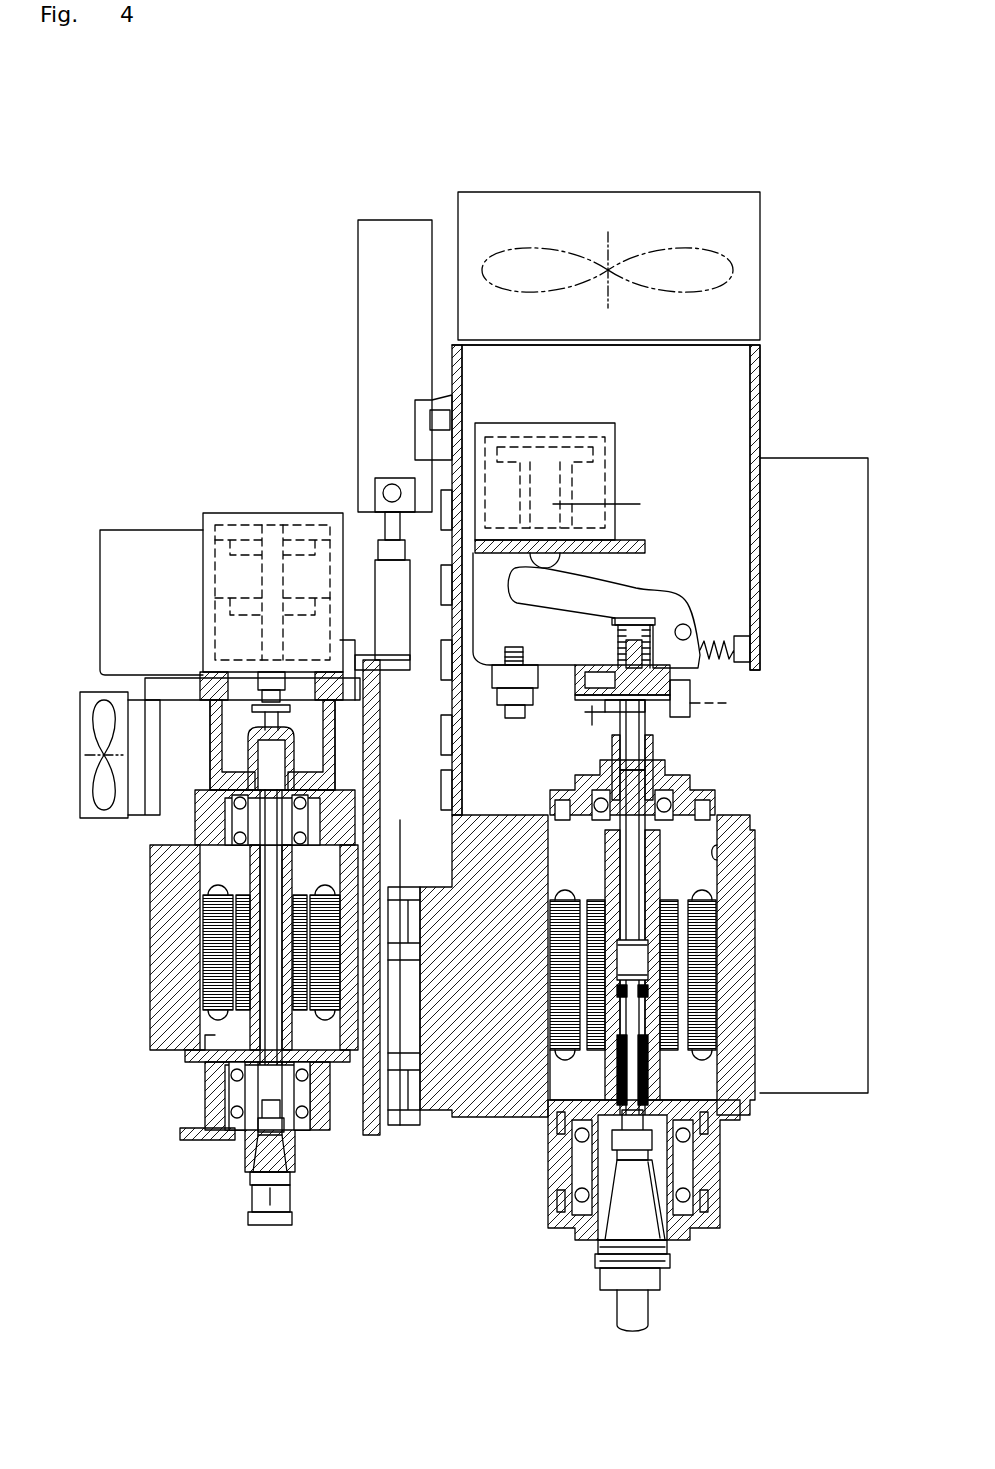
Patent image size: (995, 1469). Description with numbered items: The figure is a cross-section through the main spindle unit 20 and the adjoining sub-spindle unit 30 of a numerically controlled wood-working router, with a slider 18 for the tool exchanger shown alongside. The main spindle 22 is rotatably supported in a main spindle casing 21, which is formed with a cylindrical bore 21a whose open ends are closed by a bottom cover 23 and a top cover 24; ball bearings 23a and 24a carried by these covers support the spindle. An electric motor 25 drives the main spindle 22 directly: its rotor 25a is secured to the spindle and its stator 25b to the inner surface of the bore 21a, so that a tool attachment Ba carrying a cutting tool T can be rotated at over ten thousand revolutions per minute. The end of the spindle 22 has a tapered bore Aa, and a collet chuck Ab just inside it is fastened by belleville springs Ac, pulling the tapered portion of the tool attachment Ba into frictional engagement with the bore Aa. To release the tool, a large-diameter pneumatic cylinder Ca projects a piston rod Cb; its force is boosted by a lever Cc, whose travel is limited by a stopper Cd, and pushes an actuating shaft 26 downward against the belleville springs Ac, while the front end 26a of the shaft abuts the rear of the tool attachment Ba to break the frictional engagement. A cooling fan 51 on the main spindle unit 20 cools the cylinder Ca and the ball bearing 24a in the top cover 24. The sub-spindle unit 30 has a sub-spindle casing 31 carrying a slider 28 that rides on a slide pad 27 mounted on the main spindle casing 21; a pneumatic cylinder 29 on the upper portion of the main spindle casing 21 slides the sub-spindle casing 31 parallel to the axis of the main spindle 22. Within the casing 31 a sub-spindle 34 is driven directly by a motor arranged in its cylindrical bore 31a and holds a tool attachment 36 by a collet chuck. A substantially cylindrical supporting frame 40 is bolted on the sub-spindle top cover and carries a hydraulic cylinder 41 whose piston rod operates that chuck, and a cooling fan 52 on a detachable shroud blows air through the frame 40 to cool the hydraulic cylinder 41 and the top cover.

The slider for the tool exchanger 18 is at (830, 487).
The main spindle unit 20 is at (806, 350).
The main spindle casing 21 is at (735, 1000).
The cylindrical bore 21a is at (725, 850).
The main spindle 22 is at (720, 1080).
The bottom cover 23 is at (715, 1200).
The ball bearings 23a is at (705, 1165).
The top cover 24 is at (560, 795).
The ball bearing 24a is at (672, 802).
The electric motor 25 is at (855, 890).
The rotor 25a is at (705, 940).
The stator 25b is at (700, 905).
The actuating shaft 26 is at (630, 865).
The front end of the actuating shaft 26a is at (635, 1065).
The slide pad 27 is at (415, 1112).
The slider 28 is at (372, 1135).
The pneumatic cylinder 29 is at (375, 290).
The sub-spindle unit 30 is at (164, 452).
The sub-spindle casing 31 is at (160, 948).
The cylindrical bore 31a is at (205, 1032).
The sub-spindle 34 is at (245, 1153).
The tool attachment 36 is at (292, 1212).
The supporting frame 40 is at (330, 748).
The hydraulic cylinder 41 is at (255, 520).
The cooling fan 51 is at (735, 276).
The cooling fan 52 is at (110, 820).
The tapered bore Aa is at (660, 1247).
The collet chuck Ab is at (612, 1138).
The belleville springs Ac is at (655, 762).
The tool attachment Ba is at (652, 1290).
The pneumatic cylinder Ca is at (600, 472).
The piston rod Cb is at (616, 512).
The lever Cc is at (640, 586).
The stopper Cd is at (515, 645).
The cutting tool T is at (622, 1318).